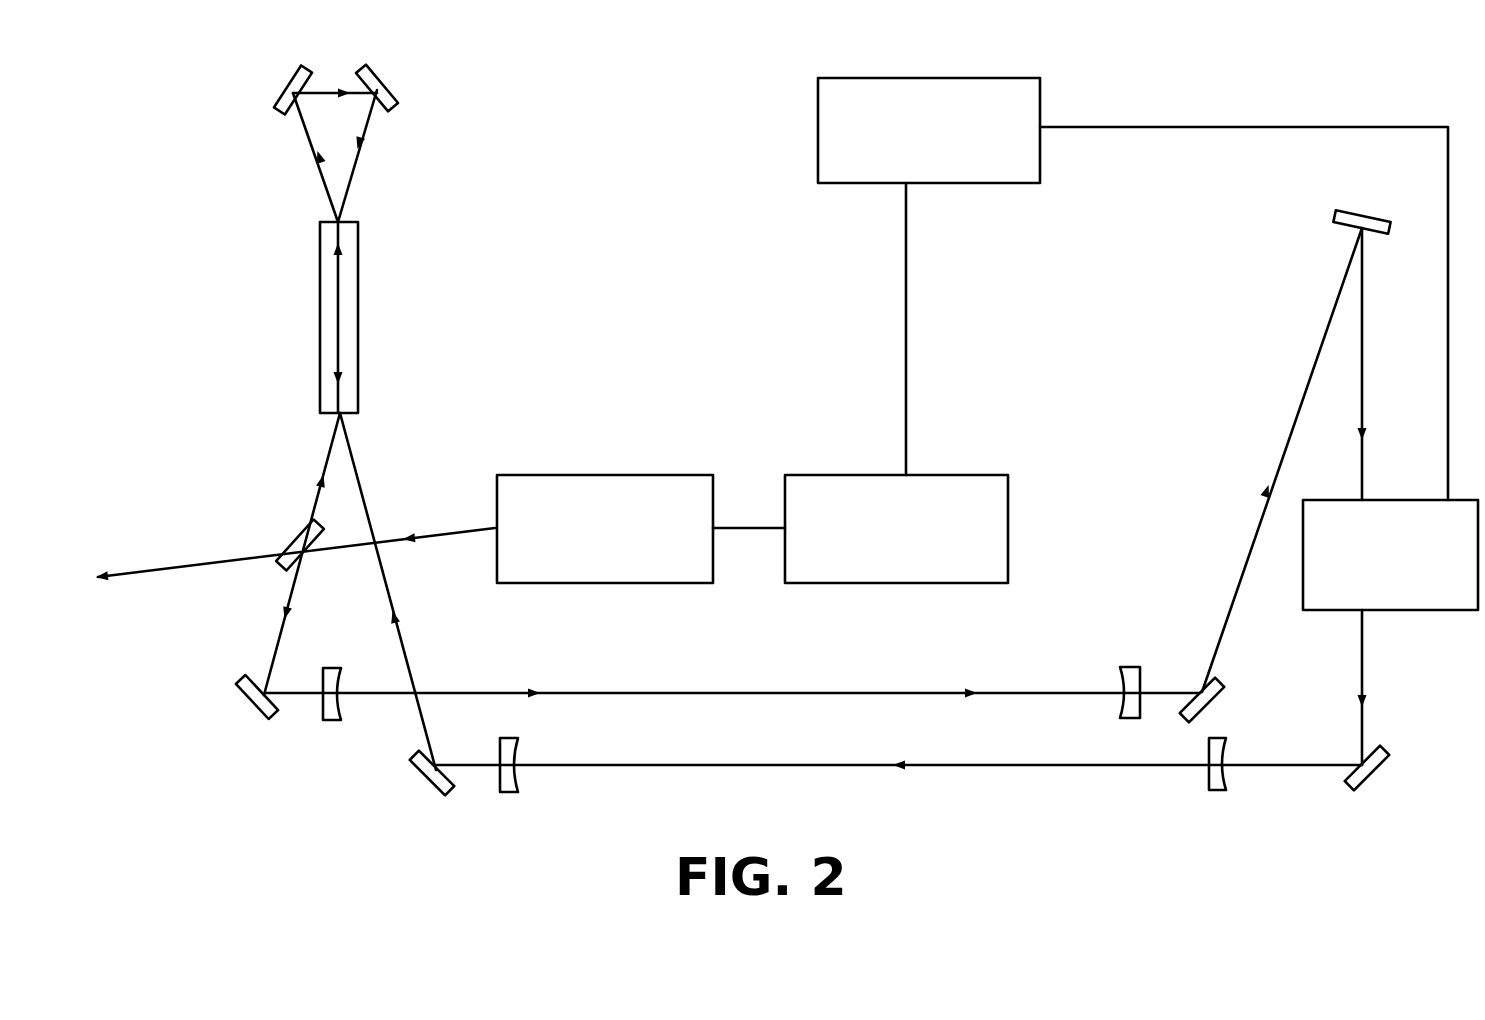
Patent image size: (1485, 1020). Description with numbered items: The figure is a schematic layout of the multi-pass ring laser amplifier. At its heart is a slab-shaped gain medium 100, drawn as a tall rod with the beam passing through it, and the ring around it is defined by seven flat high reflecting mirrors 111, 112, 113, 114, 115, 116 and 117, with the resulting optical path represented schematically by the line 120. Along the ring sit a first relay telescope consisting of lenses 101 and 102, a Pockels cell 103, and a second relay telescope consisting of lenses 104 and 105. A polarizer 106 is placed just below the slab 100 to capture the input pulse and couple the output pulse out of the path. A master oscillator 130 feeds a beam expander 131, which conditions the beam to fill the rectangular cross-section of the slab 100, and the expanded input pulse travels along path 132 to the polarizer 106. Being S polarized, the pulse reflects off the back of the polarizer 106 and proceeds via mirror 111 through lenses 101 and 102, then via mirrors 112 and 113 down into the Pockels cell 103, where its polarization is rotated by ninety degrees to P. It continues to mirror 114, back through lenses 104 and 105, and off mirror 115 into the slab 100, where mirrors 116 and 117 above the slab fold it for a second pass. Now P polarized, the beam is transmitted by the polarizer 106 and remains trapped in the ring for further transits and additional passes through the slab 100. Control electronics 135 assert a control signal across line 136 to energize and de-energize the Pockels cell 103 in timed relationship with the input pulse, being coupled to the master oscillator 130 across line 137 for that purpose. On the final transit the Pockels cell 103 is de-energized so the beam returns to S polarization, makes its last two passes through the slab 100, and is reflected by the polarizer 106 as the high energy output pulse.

The slab-shaped gain medium 100 is at (360, 313).
The lens 101 is at (325, 722).
The lens 102 is at (1134, 665).
The Pockels cell 103 is at (1367, 599).
The lens 104 is at (1217, 790).
The lens 105 is at (510, 793).
The polarizer 106 is at (290, 550).
The flat high reflecting mirror 111 is at (248, 710).
The flat high reflecting mirror 112 is at (1215, 702).
The flat high reflecting mirror 113 is at (1364, 212).
The flat high reflecting mirror 114 is at (1385, 768).
The flat high reflecting mirror 115 is at (427, 783).
The flat high reflecting mirror 116 is at (282, 90).
The flat high reflecting mirror 117 is at (387, 83).
The optical path 120 is at (970, 770).
The master oscillator 130 is at (874, 571).
The beam expander 131 is at (582, 571).
The input path 132 is at (437, 533).
The control electronics 135 is at (906, 176).
The control line 136 is at (1290, 125).
The coupling line 137 is at (912, 330).